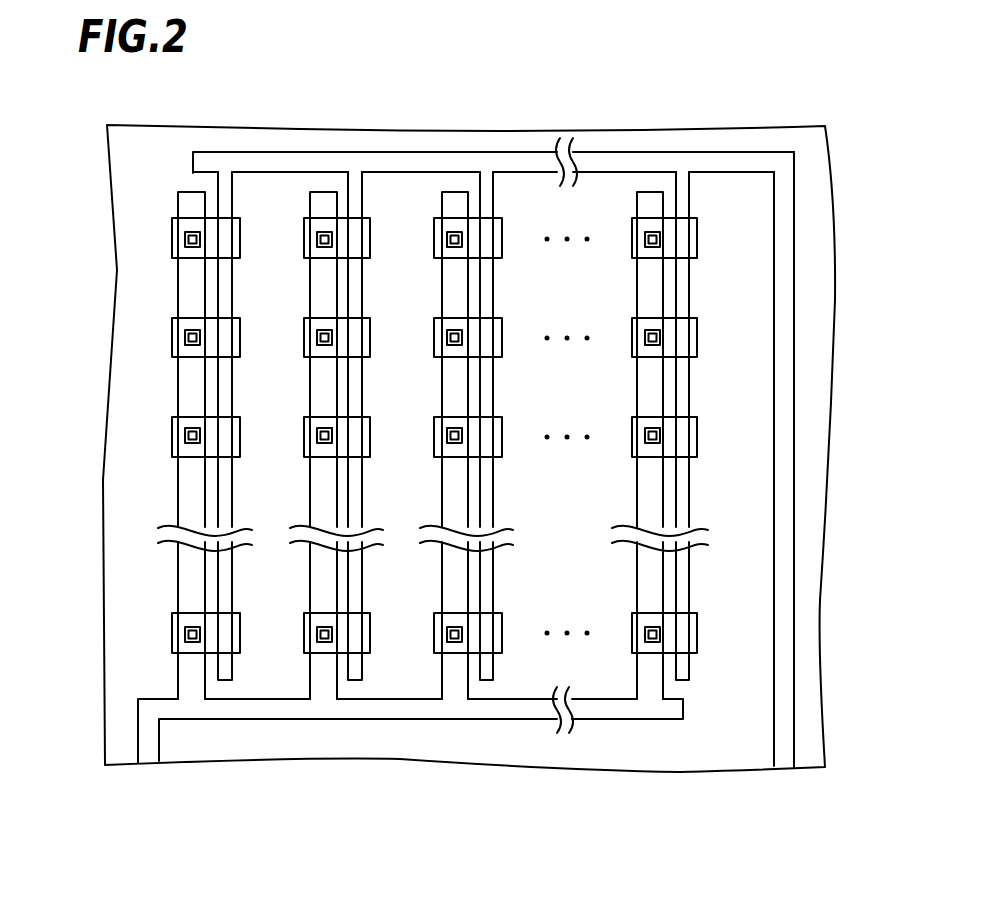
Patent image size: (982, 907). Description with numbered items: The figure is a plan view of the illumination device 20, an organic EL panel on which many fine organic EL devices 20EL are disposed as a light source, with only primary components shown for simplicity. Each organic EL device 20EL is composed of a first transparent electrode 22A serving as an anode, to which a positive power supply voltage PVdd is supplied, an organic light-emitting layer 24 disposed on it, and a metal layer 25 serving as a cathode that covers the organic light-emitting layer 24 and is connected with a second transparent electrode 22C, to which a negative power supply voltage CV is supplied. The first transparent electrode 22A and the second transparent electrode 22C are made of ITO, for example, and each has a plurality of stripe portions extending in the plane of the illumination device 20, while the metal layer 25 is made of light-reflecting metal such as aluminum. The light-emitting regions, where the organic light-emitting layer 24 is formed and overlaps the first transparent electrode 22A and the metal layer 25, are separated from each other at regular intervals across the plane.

The illumination device 20 is at (742, 98).
The organic EL device 20EL is at (167, 276).
The first transparent electrode 22A is at (186, 207).
The second transparent electrode 22C is at (223, 672).
The organic light-emitting layer 24 is at (186, 239).
The metal layer 25 is at (172, 258).
The positive power supply voltage PVdd is at (148, 768).
The negative power supply voltage CV is at (783, 778).